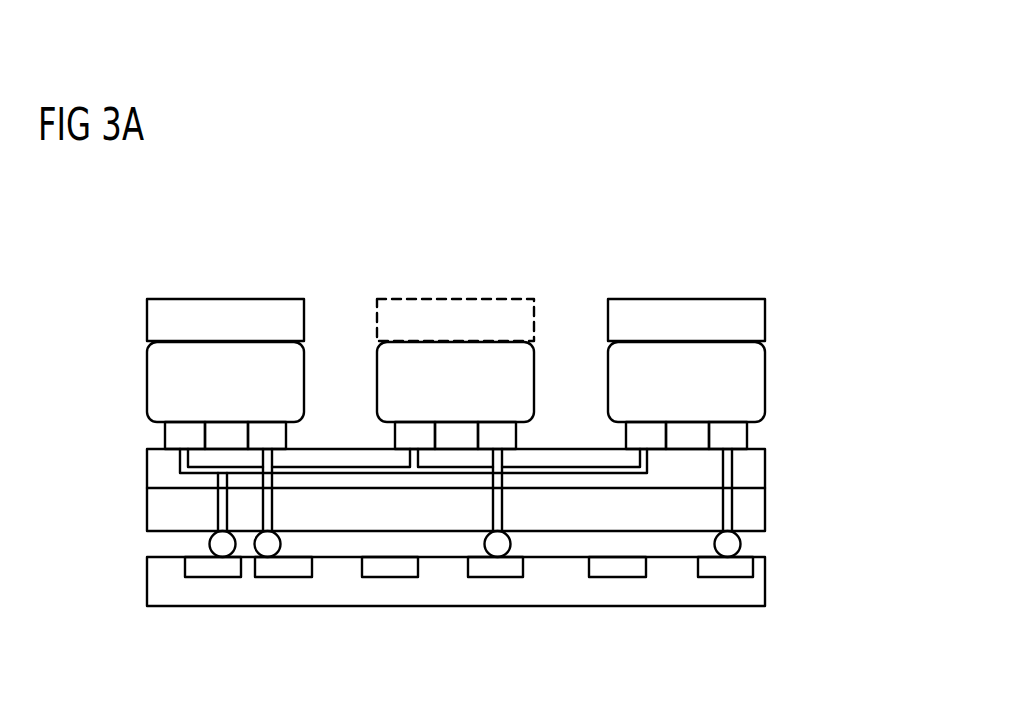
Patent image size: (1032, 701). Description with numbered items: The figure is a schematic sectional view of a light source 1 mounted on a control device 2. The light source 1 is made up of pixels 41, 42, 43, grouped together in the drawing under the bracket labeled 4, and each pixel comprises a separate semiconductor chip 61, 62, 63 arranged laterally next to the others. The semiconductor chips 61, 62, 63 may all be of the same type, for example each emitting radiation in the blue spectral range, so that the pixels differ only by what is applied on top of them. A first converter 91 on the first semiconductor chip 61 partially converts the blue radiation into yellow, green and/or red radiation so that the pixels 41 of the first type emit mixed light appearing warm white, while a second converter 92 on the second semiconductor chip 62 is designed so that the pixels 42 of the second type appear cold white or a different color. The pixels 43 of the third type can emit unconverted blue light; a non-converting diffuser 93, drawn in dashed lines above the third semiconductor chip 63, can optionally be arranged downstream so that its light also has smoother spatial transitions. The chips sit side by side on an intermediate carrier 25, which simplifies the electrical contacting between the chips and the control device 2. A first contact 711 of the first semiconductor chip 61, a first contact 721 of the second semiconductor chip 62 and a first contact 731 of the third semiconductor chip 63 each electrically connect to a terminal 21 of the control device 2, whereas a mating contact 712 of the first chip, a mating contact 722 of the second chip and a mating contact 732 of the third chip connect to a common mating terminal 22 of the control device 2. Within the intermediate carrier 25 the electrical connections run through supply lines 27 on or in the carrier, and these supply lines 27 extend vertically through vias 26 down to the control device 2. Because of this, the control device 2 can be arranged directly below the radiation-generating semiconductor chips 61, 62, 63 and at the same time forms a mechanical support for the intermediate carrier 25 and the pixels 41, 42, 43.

The light source 1 is at (830, 298).
The control device 2 is at (505, 605).
The arrangement of semiconductor modules 4 is at (765, 165).
The terminal 21 is at (284, 572).
The common mating terminal 22 is at (212, 572).
The intermediate carrier 25 is at (504, 551).
The via 26 is at (498, 508).
The supply line 27 is at (347, 470).
The pixel of the first type 41 is at (696, 235).
The pixel of the second type 42 is at (236, 235).
The pixel of the third type 43 is at (466, 235).
The first semiconductor chip 61 is at (655, 349).
The second semiconductor chip 62 is at (194, 349).
The third semiconductor chip 63 is at (424, 349).
The first converter 91 is at (733, 310).
The second converter 92 is at (273, 310).
The non-converting diffuser 93 is at (503, 310).
The first contact of the first semiconductor chip 711 is at (737, 438).
The mating contact of the first semiconductor chip 712 is at (643, 433).
The first contact of the second semiconductor chip 721 is at (280, 437).
The mating contact of the second semiconductor chip 722 is at (176, 434).
The first contact of the third semiconductor chip 731 is at (508, 437).
The mating contact of the third semiconductor chip 732 is at (412, 433).